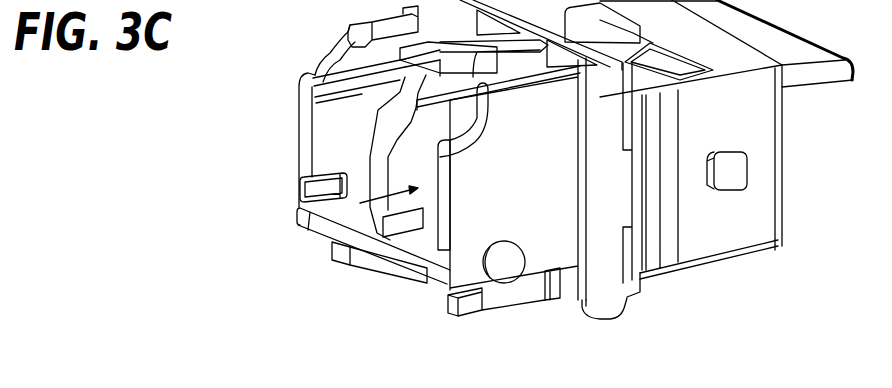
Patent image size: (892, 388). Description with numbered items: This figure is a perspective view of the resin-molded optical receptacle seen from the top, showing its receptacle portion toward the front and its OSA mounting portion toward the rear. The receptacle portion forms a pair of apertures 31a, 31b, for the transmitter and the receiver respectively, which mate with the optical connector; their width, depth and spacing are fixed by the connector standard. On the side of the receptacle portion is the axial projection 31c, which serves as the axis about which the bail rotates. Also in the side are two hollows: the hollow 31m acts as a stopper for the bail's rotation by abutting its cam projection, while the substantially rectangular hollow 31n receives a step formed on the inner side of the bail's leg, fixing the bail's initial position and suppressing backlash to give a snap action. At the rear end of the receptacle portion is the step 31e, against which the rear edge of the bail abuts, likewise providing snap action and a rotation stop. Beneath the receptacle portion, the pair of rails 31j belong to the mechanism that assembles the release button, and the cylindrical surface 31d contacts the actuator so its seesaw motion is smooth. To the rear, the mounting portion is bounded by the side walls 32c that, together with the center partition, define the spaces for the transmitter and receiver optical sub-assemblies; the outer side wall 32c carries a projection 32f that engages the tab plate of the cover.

The aperture 31a is at (302, 207).
The aperture 31b is at (322, 134).
The axial projection 31c is at (507, 273).
The cylindrical surface 31d is at (580, 302).
The step 31e is at (607, 292).
The rails 31j is at (347, 261).
The hollow 31m is at (553, 302).
The hollow 31n is at (470, 144).
The side wall 32c is at (750, 121).
The projection 32f is at (742, 175).